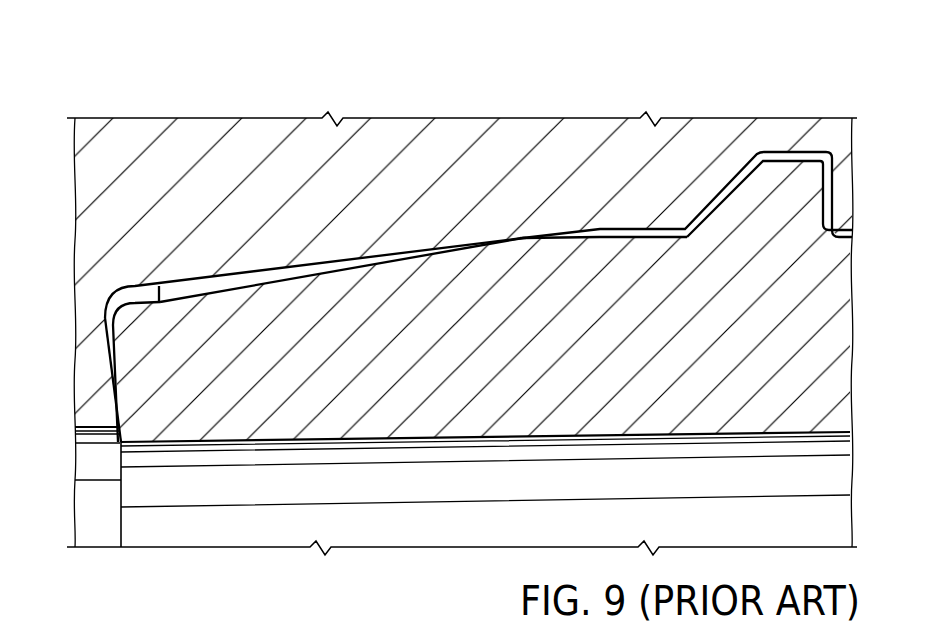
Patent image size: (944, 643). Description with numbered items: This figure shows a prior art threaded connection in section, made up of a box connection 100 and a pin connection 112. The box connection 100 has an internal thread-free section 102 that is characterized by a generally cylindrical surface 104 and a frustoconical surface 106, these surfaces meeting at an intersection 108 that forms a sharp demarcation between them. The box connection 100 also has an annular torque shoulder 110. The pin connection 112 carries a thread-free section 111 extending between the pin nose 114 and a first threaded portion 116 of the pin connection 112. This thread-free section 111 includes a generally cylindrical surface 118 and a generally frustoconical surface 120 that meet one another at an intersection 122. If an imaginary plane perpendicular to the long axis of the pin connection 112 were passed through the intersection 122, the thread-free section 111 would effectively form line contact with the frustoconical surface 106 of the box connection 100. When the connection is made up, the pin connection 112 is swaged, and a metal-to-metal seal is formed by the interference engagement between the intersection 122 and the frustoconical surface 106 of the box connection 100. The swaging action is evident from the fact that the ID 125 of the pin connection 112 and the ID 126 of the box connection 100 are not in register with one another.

The box connection 100 is at (502, 90).
The internal thread-free section 102 is at (380, 252).
The generally cylindrical surface 104 is at (642, 228).
The frustoconical surface 106 is at (306, 265).
The intersection 108 is at (605, 236).
The annular torque shoulder 110 is at (108, 390).
The thread-free section 111 is at (432, 257).
The pin connection 112 is at (592, 443).
The pin nose 114 is at (113, 373).
The first threaded portion 116 is at (785, 192).
The generally cylindrical surface 118 is at (667, 237).
The generally frustoconical surface 120 is at (257, 285).
The intersection 122 is at (523, 240).
The ID of pin connection 125 is at (192, 440).
The ID of box connection 126 is at (87, 428).